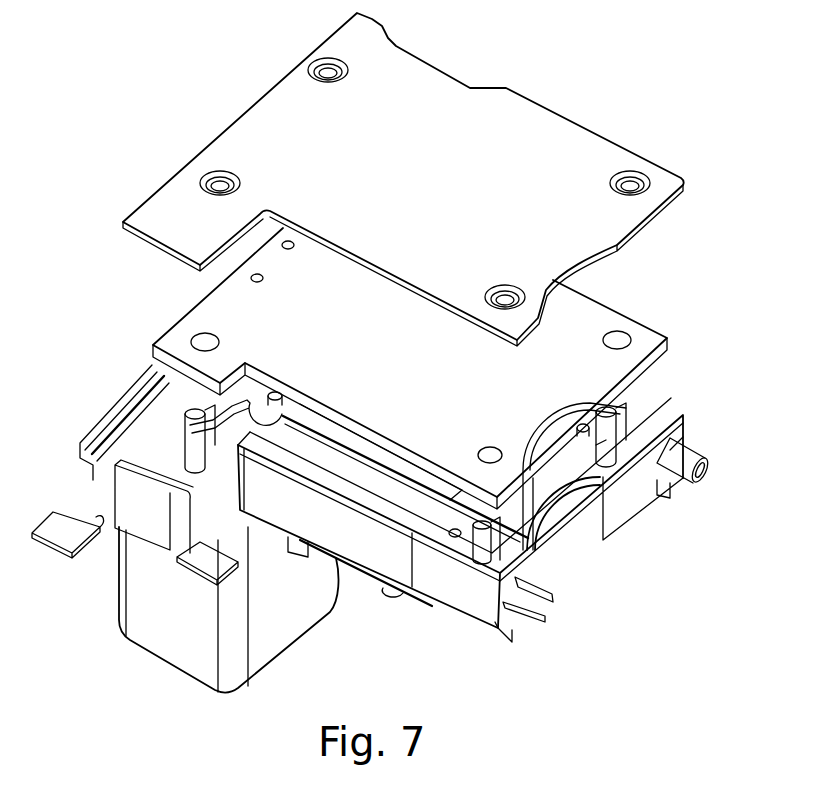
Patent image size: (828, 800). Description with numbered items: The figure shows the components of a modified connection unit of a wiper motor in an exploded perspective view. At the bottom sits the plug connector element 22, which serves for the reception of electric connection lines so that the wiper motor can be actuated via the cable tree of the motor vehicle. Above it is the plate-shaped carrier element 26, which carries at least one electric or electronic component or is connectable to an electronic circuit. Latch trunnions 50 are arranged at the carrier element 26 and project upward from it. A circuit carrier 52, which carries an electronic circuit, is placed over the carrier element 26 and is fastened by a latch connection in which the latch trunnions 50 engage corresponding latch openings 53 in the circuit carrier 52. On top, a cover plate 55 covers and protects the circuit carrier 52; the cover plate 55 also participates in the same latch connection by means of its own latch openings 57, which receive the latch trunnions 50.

The plug connector element 22 is at (180, 643).
The carrier element 26 is at (383, 545).
The latch trunnions 50 is at (602, 440).
The circuit carrier 52 is at (568, 302).
The latch openings 53 is at (207, 343).
The cover plate 55 is at (512, 125).
The latch openings 57 is at (312, 68).